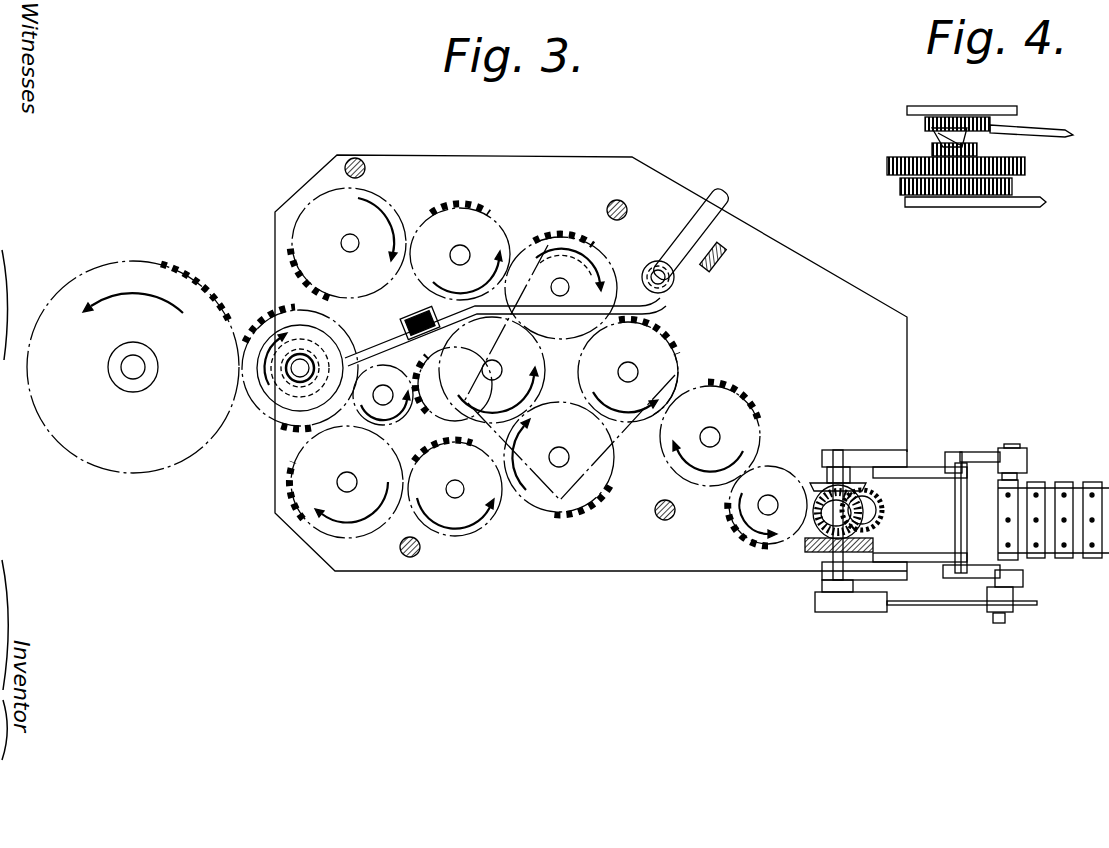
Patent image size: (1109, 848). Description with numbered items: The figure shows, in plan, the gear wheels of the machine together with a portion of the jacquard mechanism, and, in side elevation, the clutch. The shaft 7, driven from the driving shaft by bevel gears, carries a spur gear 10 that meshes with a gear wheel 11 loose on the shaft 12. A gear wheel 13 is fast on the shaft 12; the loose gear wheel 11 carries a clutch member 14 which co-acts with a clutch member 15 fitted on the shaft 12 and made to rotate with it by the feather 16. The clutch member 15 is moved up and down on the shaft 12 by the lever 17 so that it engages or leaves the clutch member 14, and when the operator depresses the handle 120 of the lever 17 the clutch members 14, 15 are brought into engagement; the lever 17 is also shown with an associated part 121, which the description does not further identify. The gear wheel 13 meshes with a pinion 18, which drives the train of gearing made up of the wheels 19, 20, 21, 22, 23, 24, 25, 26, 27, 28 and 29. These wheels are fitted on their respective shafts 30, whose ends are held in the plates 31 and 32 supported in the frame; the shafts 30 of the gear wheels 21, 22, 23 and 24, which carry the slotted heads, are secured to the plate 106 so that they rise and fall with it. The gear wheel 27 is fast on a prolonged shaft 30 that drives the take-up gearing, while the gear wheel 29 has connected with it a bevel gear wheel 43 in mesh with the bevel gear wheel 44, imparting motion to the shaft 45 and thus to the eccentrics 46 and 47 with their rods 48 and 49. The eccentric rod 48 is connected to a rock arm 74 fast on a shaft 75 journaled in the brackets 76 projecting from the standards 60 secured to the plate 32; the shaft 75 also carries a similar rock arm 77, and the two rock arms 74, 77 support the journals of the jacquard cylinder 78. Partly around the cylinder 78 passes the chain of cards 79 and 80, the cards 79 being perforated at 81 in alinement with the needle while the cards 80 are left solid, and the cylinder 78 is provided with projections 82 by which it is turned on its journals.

In FIG. 3, the shaft 7 is at (132, 369).
In FIG. 3, the spur gear 10 is at (177, 280).
In FIG. 3, the gear wheel 11 is at (262, 318).
In FIG. 4, the gear wheel 11 is at (887, 166).
In FIG. 3, the shaft 12 is at (267, 403).
In FIG. 4, the shaft 12 is at (958, 117).
In FIG. 3, the gear wheel 13 is at (290, 388).
In FIG. 4, the gear wheel 13 is at (900, 188).
In FIG. 4, the clutch member 14 is at (932, 149).
In FIG. 3, the clutch member 15 is at (299, 372).
In FIG. 4, the clutch member 15 is at (942, 135).
In FIG. 4, the feather 16 is at (938, 134).
In FIG. 3, the lever 17 is at (547, 314).
In FIG. 4, the lever 17 is at (1031, 120).
In FIG. 3, the pinion 18 is at (446, 398).
In FIG. 3, the gear wheel 19 is at (346, 482).
In FIG. 3, the gear wheel 20 is at (455, 488).
In FIG. 3, the gear wheel 21 is at (580, 505).
In FIG. 3, the gear wheel 22 is at (662, 354).
In FIG. 3, the gear wheel 23 is at (552, 236).
In FIG. 3, the gear wheel 24 is at (420, 335).
In FIG. 3, the gear wheel 25 is at (460, 252).
In FIG. 3, the gear wheel 26 is at (348, 243).
In FIG. 3, the gear wheel 27 is at (742, 397).
In FIG. 3, the gear wheel 28 is at (731, 521).
In FIG. 3, the gear wheel 29 is at (874, 520).
In FIG. 3, the shafts 30 is at (350, 243).
In FIG. 4, the plate 31 is at (1018, 105).
In FIG. 3, the plate 32 is at (591, 363).
In FIG. 4, the plate 32 is at (920, 207).
In FIG. 3, the bevel gear wheel 43 is at (866, 494).
In FIG. 3, the bevel gear wheel 44 is at (830, 472).
In FIG. 3, the shaft 45 is at (818, 525).
In FIG. 3, the eccentric 46 is at (838, 613).
In FIG. 3, the eccentric 47 is at (812, 553).
In FIG. 3, the eccentric rod 48 is at (967, 609).
In FIG. 3, the eccentric rod 49 is at (828, 586).
In FIG. 3, the standards 60 is at (887, 457).
In FIG. 3, the rock arm 74 is at (982, 570).
In FIG. 3, the shaft 75 is at (957, 513).
In FIG. 3, the brackets 76 is at (922, 466).
In FIG. 3, the rock arm 77 is at (977, 455).
In FIG. 3, the jacquard cylinder 78 is at (1020, 568).
In FIG. 3, the perforated cards 79 is at (1063, 512).
In FIG. 3, the solid cards 80 is at (1037, 517).
In FIG. 3, the perforations 81 is at (1093, 527).
In FIG. 3, the projections 82 is at (1027, 463).
In FIG. 3, the plate 106 is at (570, 372).
In FIG. 3, the handle 120 is at (717, 198).
In FIG. 3, the pin 121 is at (712, 265).